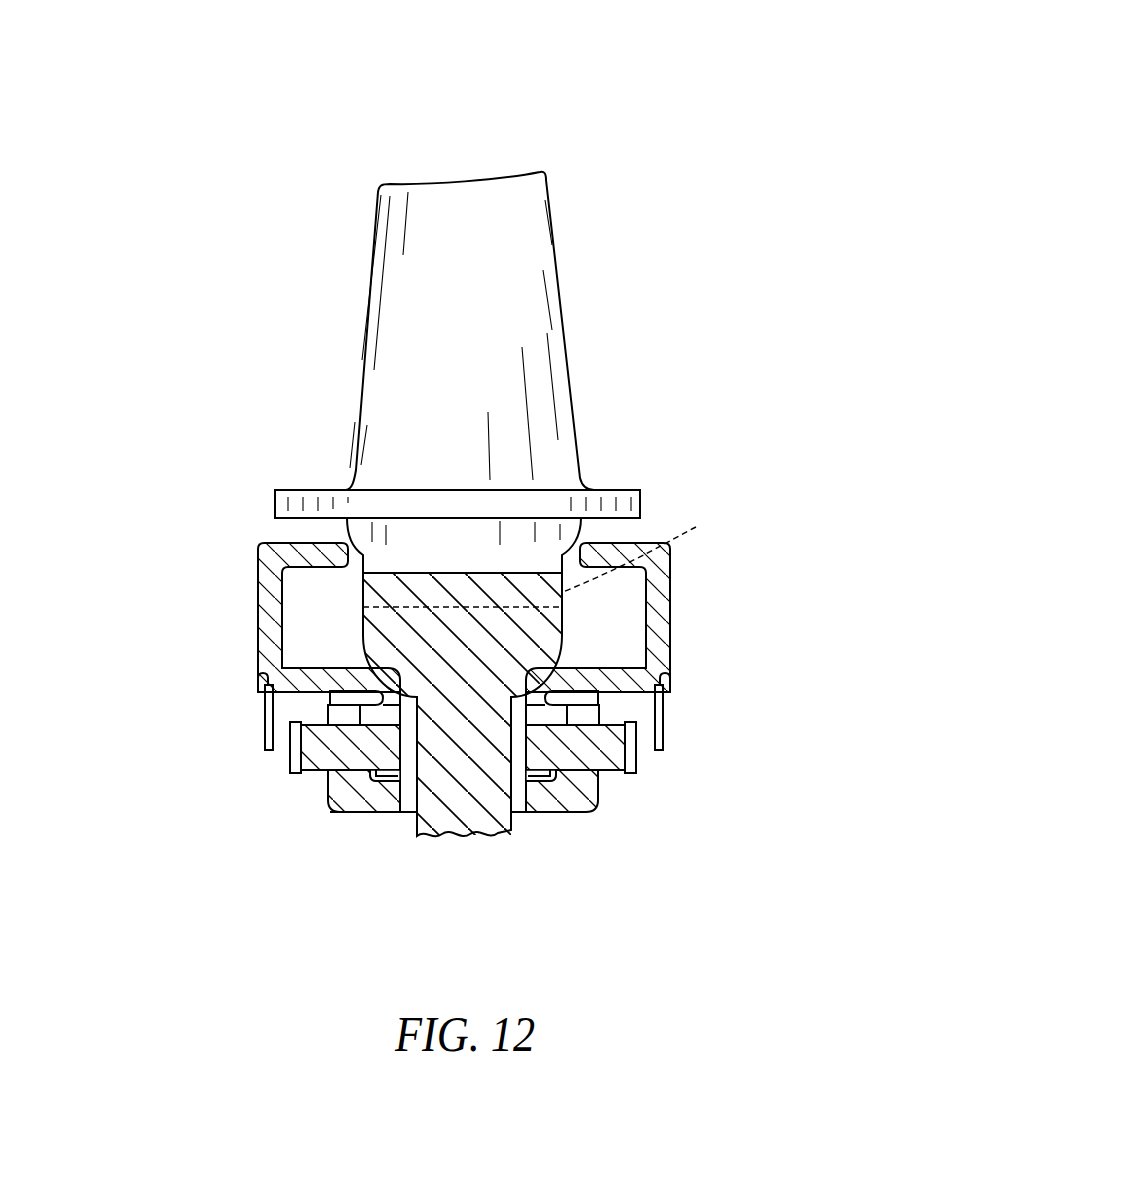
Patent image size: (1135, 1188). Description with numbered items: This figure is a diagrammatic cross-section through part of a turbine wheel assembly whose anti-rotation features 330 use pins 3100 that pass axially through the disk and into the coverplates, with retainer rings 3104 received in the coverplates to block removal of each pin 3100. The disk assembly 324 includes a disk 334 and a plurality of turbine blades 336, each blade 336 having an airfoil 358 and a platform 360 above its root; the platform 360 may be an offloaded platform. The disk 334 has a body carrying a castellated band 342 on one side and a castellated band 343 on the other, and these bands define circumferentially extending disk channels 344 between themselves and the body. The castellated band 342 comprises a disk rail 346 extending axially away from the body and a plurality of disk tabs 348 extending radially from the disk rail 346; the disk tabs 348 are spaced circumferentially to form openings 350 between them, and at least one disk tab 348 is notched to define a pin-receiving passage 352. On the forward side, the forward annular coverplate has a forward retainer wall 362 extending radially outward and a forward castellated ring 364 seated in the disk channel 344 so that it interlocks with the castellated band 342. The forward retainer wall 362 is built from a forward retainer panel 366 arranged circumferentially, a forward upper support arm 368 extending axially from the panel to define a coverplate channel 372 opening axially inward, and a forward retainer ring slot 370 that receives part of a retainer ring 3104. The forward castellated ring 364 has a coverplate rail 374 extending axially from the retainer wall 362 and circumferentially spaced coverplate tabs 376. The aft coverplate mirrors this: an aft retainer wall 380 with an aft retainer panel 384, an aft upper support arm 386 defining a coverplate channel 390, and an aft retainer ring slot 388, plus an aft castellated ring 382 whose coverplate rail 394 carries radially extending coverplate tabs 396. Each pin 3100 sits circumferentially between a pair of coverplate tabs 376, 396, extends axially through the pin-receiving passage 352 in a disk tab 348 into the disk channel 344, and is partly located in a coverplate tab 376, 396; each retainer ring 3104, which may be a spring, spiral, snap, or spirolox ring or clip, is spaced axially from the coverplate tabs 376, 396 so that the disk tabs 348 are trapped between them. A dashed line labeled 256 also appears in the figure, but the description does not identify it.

The openings 350 is at (678, 130).
The turbine blades 336 is at (704, 336).
The disk assembly 324 is at (773, 855).
The airfoil 358 is at (570, 332).
The platform 360 is at (615, 489).
The aft upper support arm 386 is at (641, 545).
The hidden platform profile 256 is at (652, 553).
The pin-receiving passage 352 is at (352, 600).
The disk 334 is at (584, 823).
The disk channels 344 is at (518, 780).
The castellated band 343 is at (568, 823).
The forward castellated ring 364 is at (136, 735).
The forward retainer wall 362 is at (256, 624).
The forward retainer panel 366 is at (257, 578).
The forward upper support arm 368 is at (300, 541).
The coverplate channel 372 is at (305, 656).
The coverplate rail 374 is at (283, 657).
The forward retainer ring slot 370 is at (258, 680).
The coverplate tabs 376 is at (345, 688).
The aft castellated ring 382 is at (751, 637).
The aft retainer wall 380 is at (676, 592).
The aft retainer panel 384 is at (672, 578).
The coverplate channel 390 is at (608, 636).
The coverplate rail 394 is at (623, 667).
The aft retainer ring slot 388 is at (670, 668).
The coverplate tabs 396 is at (598, 694).
The anti-rotation features 330 is at (171, 808).
The retainer ring 3104 is at (265, 746).
The pin 3100 is at (328, 775).
The disk rail 346 is at (390, 815).
The castellated band 342 is at (340, 818).
The disk tabs 348 is at (345, 783).